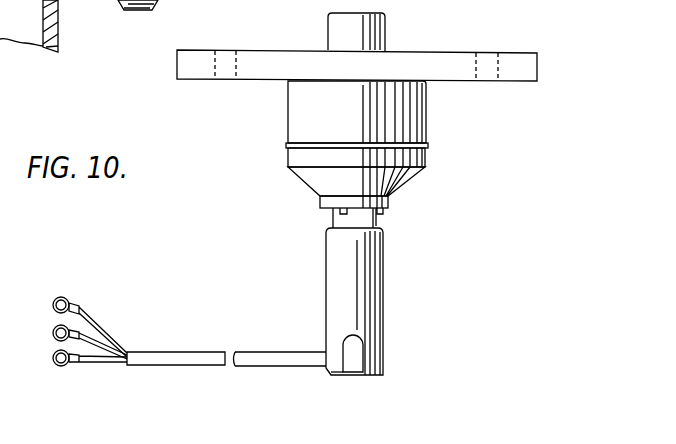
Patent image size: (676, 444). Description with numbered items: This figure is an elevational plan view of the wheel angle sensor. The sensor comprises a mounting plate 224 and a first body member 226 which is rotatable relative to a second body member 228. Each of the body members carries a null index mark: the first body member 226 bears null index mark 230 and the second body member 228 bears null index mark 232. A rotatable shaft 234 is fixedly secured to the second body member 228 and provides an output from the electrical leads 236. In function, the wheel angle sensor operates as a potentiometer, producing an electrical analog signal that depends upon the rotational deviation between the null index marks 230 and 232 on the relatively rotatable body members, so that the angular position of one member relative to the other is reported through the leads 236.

The mounting plate 224 is at (407, 56).
The first body member 226 is at (288, 108).
The second body member 228 is at (310, 177).
The null index mark 230 is at (428, 120).
The null index mark 232 is at (427, 160).
The rotatable shaft 234 is at (378, 327).
The electrical leads 236 is at (163, 352).